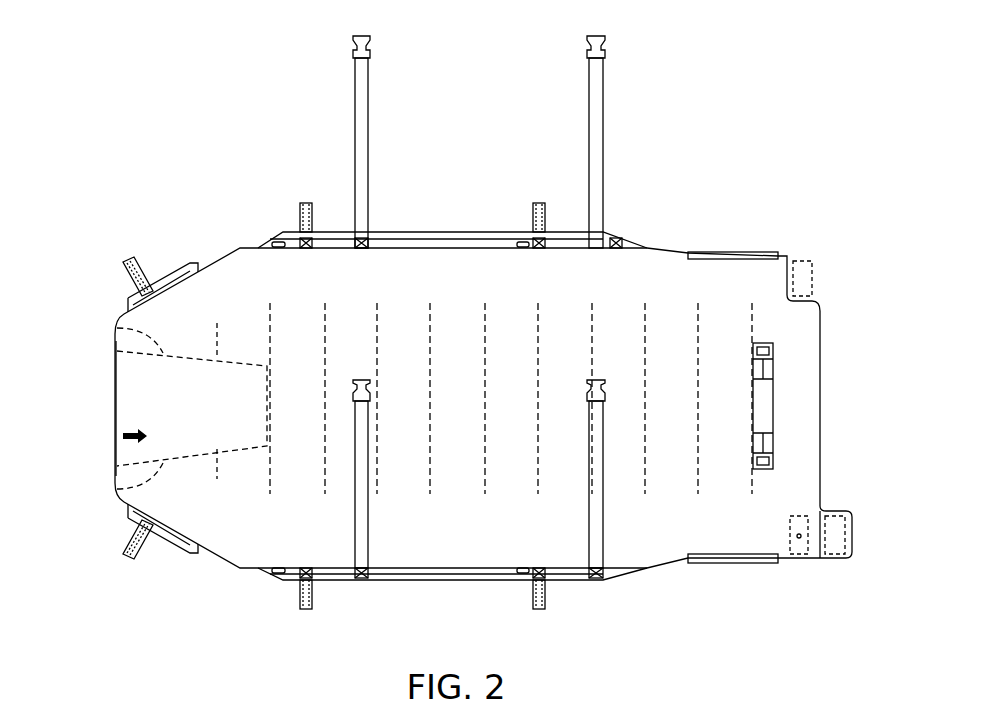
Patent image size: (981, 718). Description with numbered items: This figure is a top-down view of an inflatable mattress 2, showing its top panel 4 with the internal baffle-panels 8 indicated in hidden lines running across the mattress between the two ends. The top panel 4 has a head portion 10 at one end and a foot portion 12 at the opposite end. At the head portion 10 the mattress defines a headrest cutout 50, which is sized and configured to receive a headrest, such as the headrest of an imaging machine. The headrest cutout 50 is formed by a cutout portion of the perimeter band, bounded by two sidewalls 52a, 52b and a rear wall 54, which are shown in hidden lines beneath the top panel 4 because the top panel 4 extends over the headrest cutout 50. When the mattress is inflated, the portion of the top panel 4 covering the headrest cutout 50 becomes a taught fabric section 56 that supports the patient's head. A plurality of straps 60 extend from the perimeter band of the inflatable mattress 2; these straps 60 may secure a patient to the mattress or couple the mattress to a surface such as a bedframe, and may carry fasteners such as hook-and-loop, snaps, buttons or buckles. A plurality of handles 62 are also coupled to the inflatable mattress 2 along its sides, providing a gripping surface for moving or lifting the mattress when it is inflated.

The inflatable mattress 2 is at (773, 200).
The top panel 4 is at (663, 273).
The baffle-panels 8 is at (270, 317).
The head portion 10 is at (108, 373).
The foot portion 12 is at (830, 393).
The headrest cutout 50 is at (115, 437).
The sidewall 52a is at (118, 492).
The sidewall 52b is at (115, 328).
The rear wall 54 is at (267, 390).
The taught fabric section 56 is at (145, 390).
The straps 60 is at (368, 85).
The handles 62 is at (306, 610).